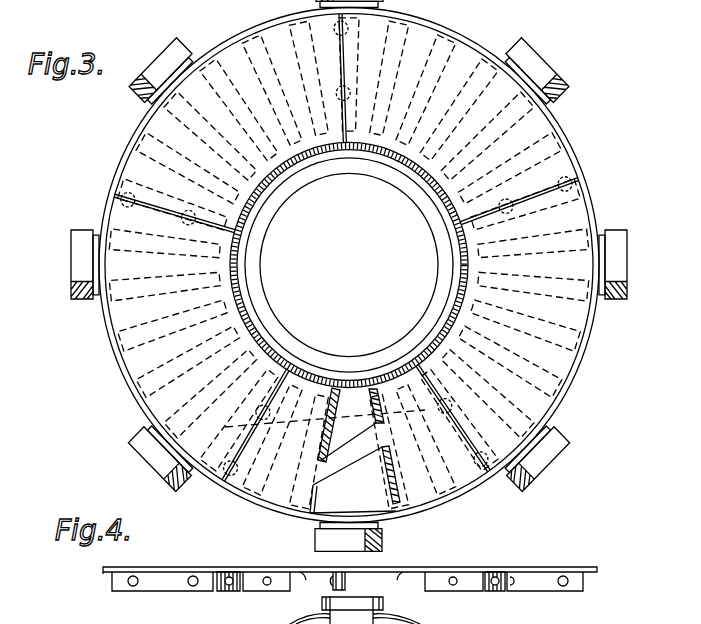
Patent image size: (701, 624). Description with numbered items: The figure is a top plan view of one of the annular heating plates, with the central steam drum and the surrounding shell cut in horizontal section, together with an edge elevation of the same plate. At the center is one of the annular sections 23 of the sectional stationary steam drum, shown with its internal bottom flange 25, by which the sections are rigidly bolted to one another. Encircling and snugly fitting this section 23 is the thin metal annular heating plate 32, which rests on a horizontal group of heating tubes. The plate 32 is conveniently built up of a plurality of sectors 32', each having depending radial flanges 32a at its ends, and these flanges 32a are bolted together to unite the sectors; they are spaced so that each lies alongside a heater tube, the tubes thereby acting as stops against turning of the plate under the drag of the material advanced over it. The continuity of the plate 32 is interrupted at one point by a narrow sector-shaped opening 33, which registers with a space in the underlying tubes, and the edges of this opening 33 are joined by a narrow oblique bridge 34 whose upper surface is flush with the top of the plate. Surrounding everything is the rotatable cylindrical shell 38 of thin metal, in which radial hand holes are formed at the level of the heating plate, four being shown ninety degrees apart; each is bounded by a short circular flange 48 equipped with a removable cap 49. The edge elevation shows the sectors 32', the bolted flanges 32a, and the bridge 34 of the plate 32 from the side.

In FIG. 3, the annular section 23 is at (238, 267).
In FIG. 3, the bottom flange 25 is at (447, 238).
In FIG. 3, the annular heating plate 32 is at (364, 265).
In FIG. 4, the annular heating plate 32 is at (370, 569).
In FIG. 3, the sector 32' is at (363, 278).
In FIG. 4, the sector 32' is at (347, 565).
In FIG. 3, the depending flange 32a is at (351, 425).
In FIG. 4, the depending flange 32a is at (237, 592).
In FIG. 3, the sector-shaped opening 33 is at (325, 435).
In FIG. 3, the oblique bridge 34 is at (340, 458).
In FIG. 4, the oblique bridge 34 is at (360, 572).
In FIG. 3, the cylindrical shell 38 is at (583, 178).
In FIG. 3, the circular flange 48 is at (605, 231).
In FIG. 3, the removable cap 49 is at (158, 68).